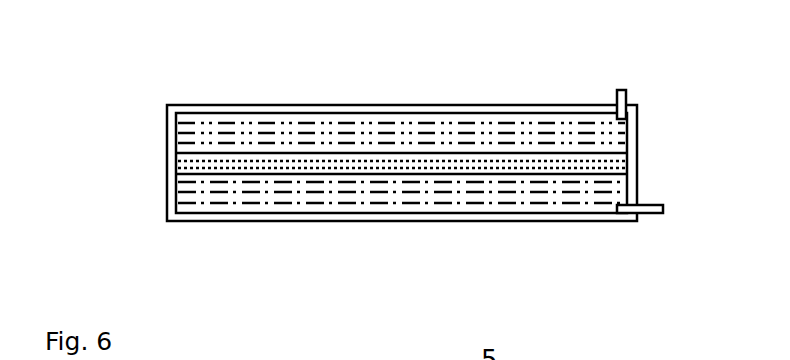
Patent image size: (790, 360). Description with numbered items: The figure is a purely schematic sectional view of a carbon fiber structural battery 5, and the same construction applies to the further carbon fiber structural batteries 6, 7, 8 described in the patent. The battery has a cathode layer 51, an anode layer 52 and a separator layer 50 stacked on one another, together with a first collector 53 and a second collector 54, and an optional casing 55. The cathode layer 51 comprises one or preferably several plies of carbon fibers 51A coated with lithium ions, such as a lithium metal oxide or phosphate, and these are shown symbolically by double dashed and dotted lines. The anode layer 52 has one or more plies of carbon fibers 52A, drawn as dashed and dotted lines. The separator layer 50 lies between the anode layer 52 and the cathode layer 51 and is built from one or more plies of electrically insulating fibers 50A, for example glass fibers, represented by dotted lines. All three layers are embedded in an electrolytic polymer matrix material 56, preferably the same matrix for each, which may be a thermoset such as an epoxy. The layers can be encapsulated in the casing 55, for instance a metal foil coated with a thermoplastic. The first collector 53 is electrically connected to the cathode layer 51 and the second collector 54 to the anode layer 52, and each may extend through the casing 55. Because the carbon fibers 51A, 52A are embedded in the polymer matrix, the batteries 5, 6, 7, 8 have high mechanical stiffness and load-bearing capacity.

The carbon fiber structural battery 5 is at (380, 156).
The carbon fiber structural battery 6 is at (380, 156).
The carbon fiber structural battery 7 is at (380, 156).
The carbon fiber structural battery 8 is at (380, 156).
The separator layer 50 is at (338, 181).
The electrically insulating fibers 50A is at (257, 162).
The cathode layer 51 is at (337, 98).
The carbon fibers 51A is at (222, 122).
The anode layer 52 is at (337, 236).
The carbon fibers 52A is at (212, 203).
The first collector 53 is at (619, 90).
The second collector 54 is at (657, 205).
The casing 55 is at (375, 108).
The electrolytic polymer matrix material 56 is at (297, 149).